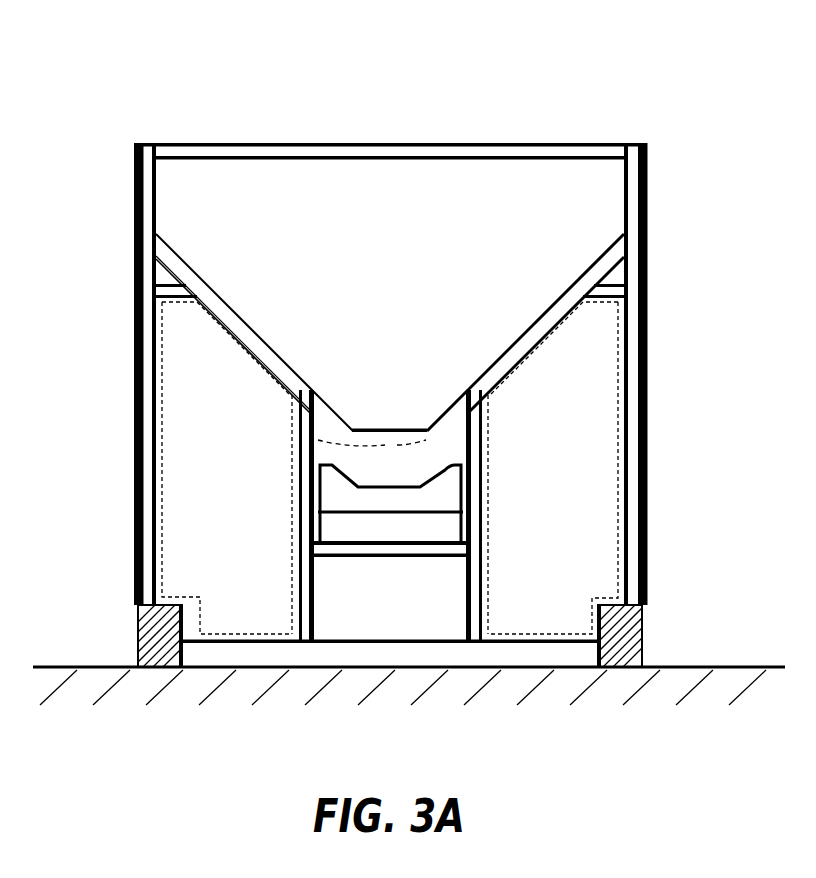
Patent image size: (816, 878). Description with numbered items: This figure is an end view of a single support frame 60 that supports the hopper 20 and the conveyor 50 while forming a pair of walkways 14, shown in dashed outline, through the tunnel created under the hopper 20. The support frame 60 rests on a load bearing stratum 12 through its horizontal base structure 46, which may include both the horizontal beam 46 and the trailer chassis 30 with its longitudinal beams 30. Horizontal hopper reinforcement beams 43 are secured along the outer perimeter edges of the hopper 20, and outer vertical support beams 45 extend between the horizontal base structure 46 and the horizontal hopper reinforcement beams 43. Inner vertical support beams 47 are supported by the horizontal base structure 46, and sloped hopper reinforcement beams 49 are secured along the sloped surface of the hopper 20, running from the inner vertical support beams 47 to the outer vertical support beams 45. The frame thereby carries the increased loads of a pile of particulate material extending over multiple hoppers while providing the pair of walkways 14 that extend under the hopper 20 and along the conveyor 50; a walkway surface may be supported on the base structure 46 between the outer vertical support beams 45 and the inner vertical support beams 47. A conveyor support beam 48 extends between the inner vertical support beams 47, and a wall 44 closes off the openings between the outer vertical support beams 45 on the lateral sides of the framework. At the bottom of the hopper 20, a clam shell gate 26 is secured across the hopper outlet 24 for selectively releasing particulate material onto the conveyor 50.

The support frame 60 is at (150, 97).
The horizontal hopper reinforcement beams 43 is at (138, 146).
The wall 44 is at (134, 272).
The outer vertical support beams 45 is at (136, 391).
The walkways 14 is at (156, 488).
The hopper outlet 24 is at (373, 425).
The sloped hopper reinforcement beams 49 is at (193, 281).
The clam shell gate 26 is at (292, 440).
The inner vertical support beams 47 is at (306, 459).
The conveyor 50 is at (440, 491).
The conveyor support beam 48 is at (373, 549).
The horizontal base structure 46 is at (532, 652).
The trailer chassis 30 is at (142, 611).
The hopper 20 is at (402, 272).
The load bearing stratum 12 is at (409, 707).